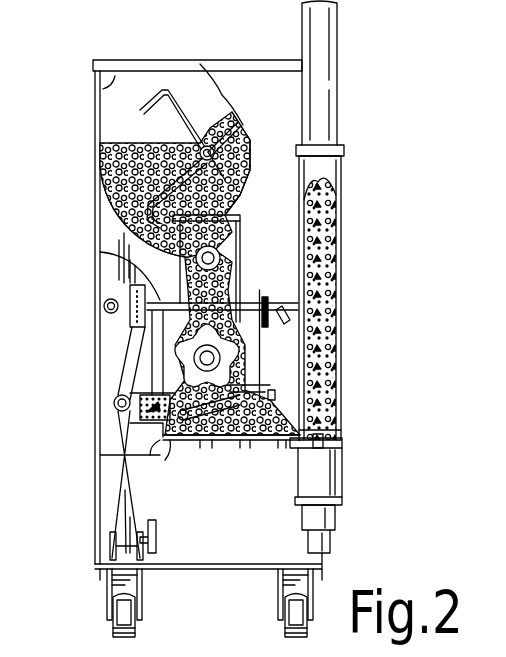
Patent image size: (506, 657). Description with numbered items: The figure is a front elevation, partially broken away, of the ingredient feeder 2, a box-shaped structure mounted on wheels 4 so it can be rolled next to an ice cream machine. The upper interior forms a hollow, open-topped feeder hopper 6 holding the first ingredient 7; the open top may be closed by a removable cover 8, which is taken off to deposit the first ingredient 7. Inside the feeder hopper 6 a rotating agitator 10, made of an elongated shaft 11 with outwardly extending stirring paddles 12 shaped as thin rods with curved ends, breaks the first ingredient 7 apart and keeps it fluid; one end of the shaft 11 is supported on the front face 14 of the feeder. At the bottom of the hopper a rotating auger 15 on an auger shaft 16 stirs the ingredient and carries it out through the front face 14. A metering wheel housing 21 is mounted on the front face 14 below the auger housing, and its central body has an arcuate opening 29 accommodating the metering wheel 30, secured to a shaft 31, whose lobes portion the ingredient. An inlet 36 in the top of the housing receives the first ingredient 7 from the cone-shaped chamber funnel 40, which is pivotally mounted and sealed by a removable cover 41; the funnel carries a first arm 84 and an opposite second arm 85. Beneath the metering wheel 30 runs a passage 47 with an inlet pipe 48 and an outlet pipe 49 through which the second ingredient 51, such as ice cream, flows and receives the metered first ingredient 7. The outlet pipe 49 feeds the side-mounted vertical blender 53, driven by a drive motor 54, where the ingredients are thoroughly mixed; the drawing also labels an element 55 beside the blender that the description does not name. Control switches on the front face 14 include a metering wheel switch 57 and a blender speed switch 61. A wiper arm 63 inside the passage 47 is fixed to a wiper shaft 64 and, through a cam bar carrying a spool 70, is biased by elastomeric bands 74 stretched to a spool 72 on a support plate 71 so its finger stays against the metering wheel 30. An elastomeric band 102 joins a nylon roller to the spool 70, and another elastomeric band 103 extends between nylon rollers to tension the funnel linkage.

The ingredient feeder 2 is at (91, 87).
The wheels 4 is at (143, 602).
The feeder hopper 6 is at (115, 76).
The first ingredient 7 is at (127, 138).
The removable cover 8 is at (145, 62).
The rotating agitator 10 is at (214, 108).
The elongated shaft 11 is at (233, 113).
The stirring paddles 12 is at (192, 106).
The front face 14 is at (295, 147).
The rotating auger 15 is at (240, 300).
The auger shaft 16 is at (222, 242).
The metering wheel housing 21 is at (160, 352).
The arcuate opening 29 is at (262, 378).
The metering wheel 30 is at (275, 393).
The shaft 31 is at (165, 440).
The inlet 36 is at (165, 333).
The chamber funnel 40 is at (224, 258).
The removable cover 41 is at (235, 215).
The passage 47 is at (245, 438).
The inlet pipe 48 is at (127, 446).
The outlet pipe 49 is at (281, 440).
The second ingredient 51 is at (135, 425).
The vertical blender 53 is at (343, 320).
The drive motor 54 is at (345, 500).
The feed tube 55 is at (338, 52).
The metering wheel switch 57 is at (104, 302).
The blender speed switch 61 is at (262, 342).
The wiper arm 63 is at (205, 437).
The wiper shaft 64 is at (182, 425).
The spool 70 is at (113, 404).
The support plate 71 is at (158, 545).
The spool 72 is at (110, 545).
The elastomeric bands 74 is at (120, 508).
The first arm 84 is at (268, 292).
The second arm 85 is at (128, 266).
The elastomeric band 102 is at (123, 368).
The elastomeric band 103 is at (320, 390).